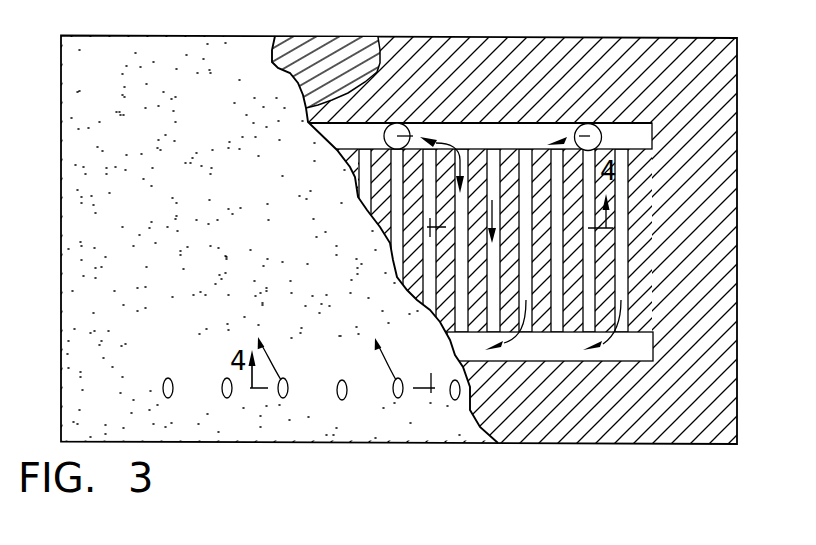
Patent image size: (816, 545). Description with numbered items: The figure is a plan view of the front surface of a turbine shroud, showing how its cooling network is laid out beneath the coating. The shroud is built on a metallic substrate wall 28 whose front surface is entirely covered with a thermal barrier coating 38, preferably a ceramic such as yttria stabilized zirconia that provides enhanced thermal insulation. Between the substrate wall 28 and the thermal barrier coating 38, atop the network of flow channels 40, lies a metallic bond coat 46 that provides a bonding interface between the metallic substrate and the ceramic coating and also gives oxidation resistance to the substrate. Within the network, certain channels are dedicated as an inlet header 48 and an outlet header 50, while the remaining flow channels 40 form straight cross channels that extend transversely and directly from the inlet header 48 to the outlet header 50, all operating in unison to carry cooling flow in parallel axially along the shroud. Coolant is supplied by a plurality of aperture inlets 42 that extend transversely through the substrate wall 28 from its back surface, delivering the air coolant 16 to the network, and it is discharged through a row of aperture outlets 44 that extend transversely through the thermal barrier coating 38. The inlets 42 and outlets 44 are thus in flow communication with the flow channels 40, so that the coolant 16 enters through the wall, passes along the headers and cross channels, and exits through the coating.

The air coolant 16 is at (414, 124).
The substrate wall 28 is at (737, 170).
The thermal barrier coating 38 is at (213, 120).
The flow channels 40 is at (618, 236).
The aperture inlets 42 is at (590, 124).
The aperture outlets 44 is at (342, 398).
The bond coat 46 is at (315, 55).
The inlet header 48 is at (514, 147).
The outlet header 50 is at (565, 356).